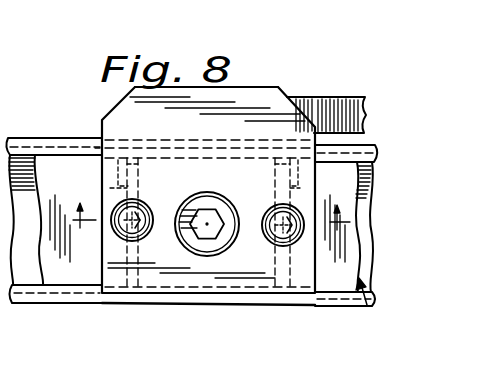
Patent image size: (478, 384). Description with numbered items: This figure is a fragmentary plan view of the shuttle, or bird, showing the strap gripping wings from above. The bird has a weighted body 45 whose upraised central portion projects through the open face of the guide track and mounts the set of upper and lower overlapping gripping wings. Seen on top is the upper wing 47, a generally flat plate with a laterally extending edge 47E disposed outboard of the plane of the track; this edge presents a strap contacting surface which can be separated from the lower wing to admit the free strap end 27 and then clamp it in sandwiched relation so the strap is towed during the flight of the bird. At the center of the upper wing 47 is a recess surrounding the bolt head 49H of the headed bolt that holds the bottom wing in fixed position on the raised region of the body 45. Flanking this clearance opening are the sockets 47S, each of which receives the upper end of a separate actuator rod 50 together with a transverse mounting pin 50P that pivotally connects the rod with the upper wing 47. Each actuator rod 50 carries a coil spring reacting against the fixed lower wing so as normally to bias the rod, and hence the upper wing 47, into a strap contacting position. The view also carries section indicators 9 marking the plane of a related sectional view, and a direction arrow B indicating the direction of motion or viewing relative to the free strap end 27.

The weighted body 45 is at (53, 272).
The free strap end 27 is at (334, 110).
The upper wing 47 is at (156, 278).
The laterally extending edge 47E is at (255, 88).
The sockets 47S is at (140, 219).
The bolt head 49H is at (211, 202).
The actuator rod 50 is at (164, 237).
The transverse mounting pin 50P is at (105, 188).
The section line 9- 9 is at (211, 232).
The direction arrow B is at (368, 308).